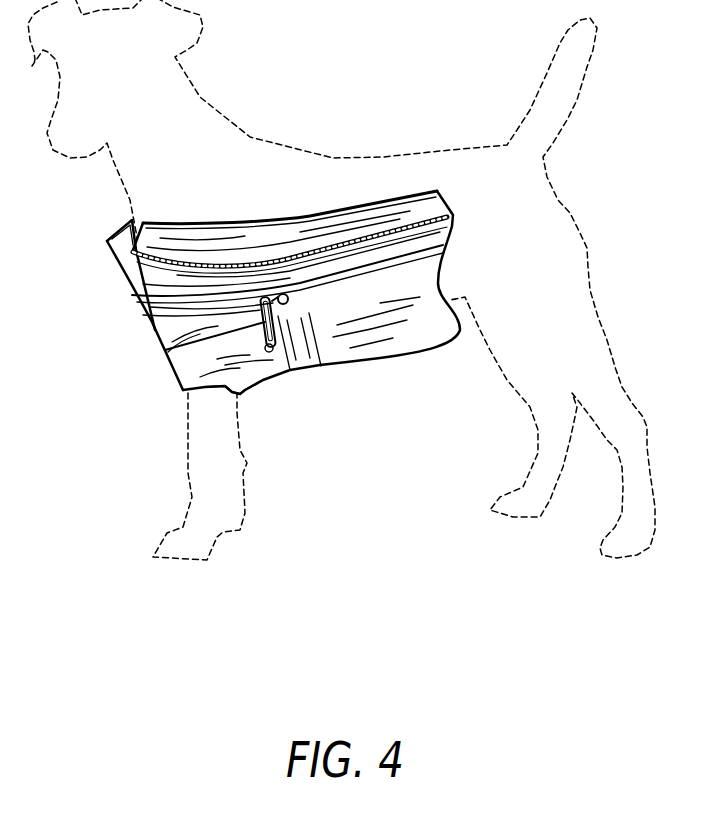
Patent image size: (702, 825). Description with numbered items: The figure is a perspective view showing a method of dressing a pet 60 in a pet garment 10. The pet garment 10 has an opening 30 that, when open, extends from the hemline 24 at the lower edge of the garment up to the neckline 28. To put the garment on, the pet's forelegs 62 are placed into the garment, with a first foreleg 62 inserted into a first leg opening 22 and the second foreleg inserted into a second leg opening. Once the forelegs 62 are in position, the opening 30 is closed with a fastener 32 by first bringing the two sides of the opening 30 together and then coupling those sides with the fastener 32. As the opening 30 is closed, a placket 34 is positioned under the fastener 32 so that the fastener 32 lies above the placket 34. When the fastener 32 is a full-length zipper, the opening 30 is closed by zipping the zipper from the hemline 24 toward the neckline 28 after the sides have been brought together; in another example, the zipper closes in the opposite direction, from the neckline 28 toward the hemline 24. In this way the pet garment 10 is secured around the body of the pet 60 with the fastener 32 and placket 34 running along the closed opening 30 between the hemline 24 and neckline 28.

The pet garment 10 is at (283, 298).
The first leg opening 22 is at (229, 389).
The hemline 24 is at (447, 238).
The neckline 28 is at (120, 251).
The opening 30 is at (122, 224).
The fastener 32 is at (403, 222).
The placket 34 is at (225, 235).
The pet 60 is at (173, 93).
The forelegs 62 is at (190, 480).